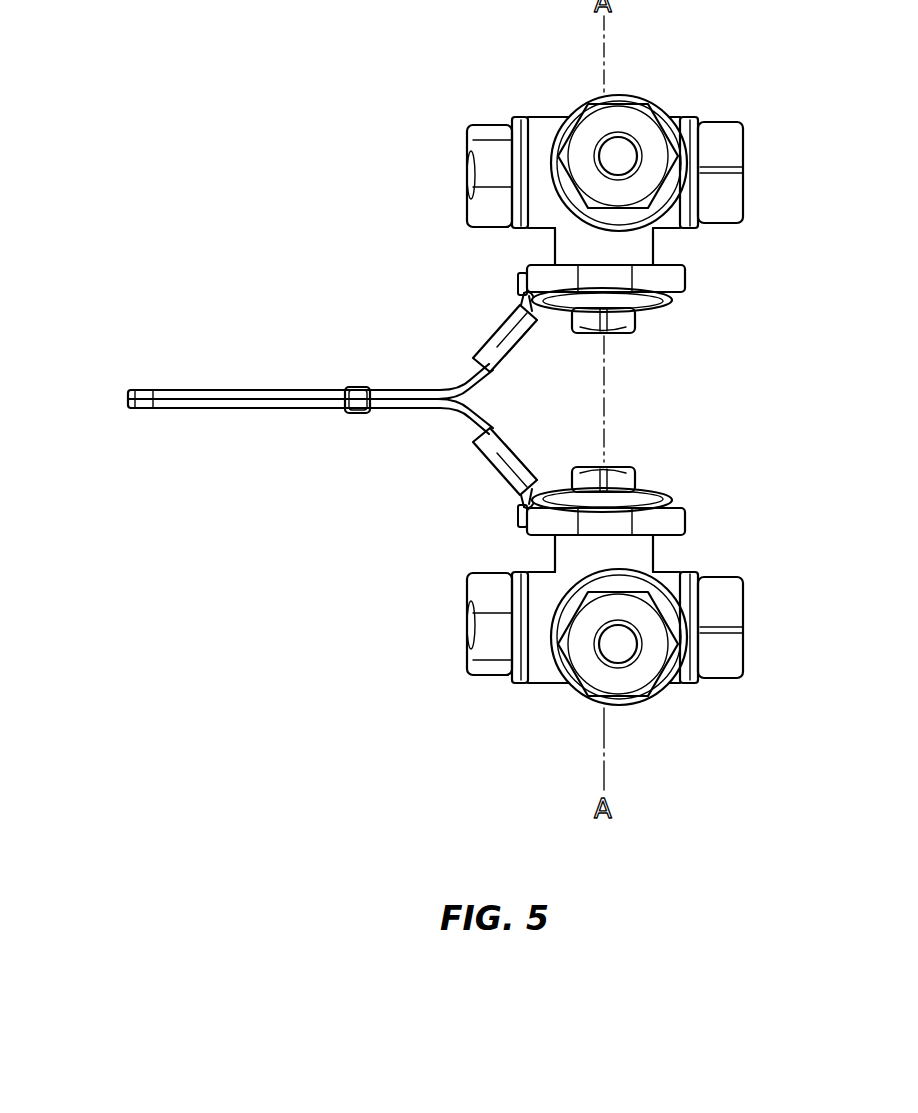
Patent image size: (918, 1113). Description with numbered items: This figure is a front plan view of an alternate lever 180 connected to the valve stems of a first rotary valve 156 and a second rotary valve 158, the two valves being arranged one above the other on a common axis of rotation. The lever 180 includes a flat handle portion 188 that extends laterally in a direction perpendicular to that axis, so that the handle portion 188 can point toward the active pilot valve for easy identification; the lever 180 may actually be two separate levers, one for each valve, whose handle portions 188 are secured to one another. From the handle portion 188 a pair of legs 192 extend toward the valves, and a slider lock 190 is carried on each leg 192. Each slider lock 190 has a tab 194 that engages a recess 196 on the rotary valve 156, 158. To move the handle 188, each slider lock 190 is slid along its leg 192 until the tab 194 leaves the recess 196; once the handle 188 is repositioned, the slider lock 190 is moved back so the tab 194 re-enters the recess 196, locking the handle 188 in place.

The first rotary valve 156 is at (448, 128).
The second rotary valve 158 is at (447, 585).
The lever 180 is at (327, 398).
The handle portion 188 is at (200, 390).
The slider lock 190 is at (505, 329).
The leg 192 is at (466, 368).
The tab 194 is at (522, 500).
The recess 196 is at (520, 522).